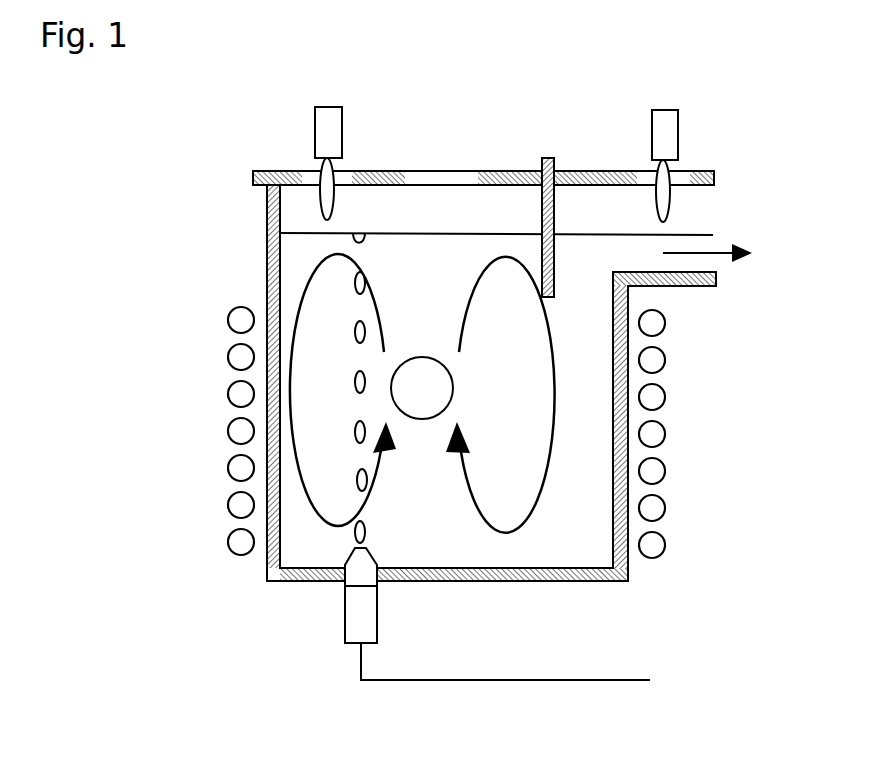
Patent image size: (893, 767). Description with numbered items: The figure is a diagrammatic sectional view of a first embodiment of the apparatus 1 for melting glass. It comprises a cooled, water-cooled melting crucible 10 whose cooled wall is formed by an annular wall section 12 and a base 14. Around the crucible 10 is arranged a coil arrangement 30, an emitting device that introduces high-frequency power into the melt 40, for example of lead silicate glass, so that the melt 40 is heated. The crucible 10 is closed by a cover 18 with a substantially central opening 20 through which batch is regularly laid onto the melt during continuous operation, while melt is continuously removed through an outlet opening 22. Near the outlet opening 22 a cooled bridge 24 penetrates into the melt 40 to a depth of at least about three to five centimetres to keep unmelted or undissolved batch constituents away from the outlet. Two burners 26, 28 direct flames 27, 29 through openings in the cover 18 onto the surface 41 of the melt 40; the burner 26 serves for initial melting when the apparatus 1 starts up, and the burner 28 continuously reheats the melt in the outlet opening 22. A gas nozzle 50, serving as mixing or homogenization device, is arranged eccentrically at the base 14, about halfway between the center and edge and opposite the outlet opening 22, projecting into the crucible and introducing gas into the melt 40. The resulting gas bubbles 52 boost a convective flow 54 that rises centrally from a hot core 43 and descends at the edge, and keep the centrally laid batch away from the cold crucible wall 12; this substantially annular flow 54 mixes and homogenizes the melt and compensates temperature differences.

The apparatus 1 is at (186, 362).
The melting crucible 10 is at (267, 230).
The annular wall section 12 is at (267, 283).
The base 14 is at (447, 583).
The cover 18 is at (503, 171).
The central opening 20 is at (440, 171).
The outlet opening 22 is at (707, 243).
The cooled bridge 24 is at (547, 299).
The burner 26 is at (342, 132).
The flame 27 is at (340, 185).
The burner 28 is at (678, 133).
The flame 29 is at (698, 172).
The coil arrangement 30 is at (228, 468).
The melt 40 is at (519, 406).
The surface of the melt 41 is at (638, 234).
The hot core 43 is at (438, 402).
The gas nozzle 50 is at (345, 614).
The gas bubbles 52 is at (366, 240).
The convective flow 54 is at (322, 520).